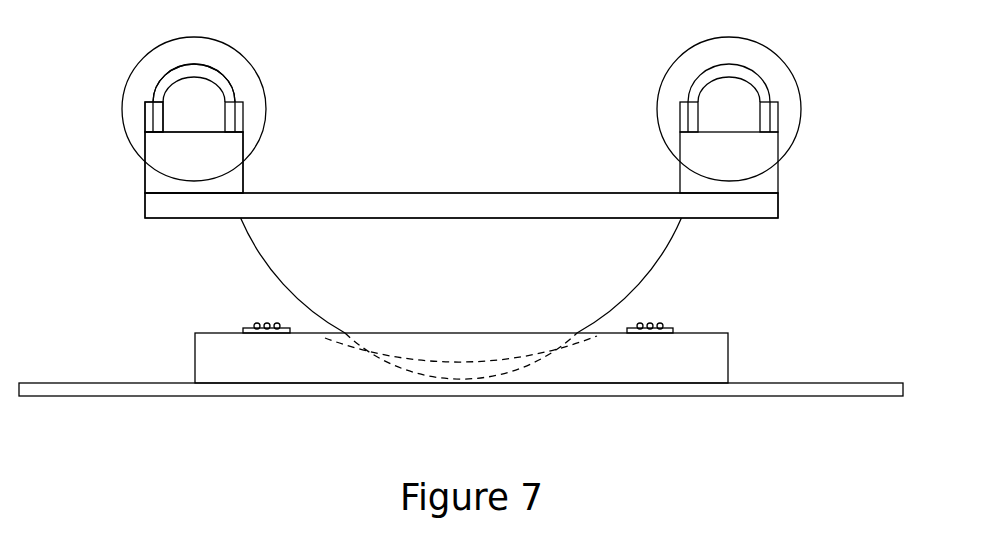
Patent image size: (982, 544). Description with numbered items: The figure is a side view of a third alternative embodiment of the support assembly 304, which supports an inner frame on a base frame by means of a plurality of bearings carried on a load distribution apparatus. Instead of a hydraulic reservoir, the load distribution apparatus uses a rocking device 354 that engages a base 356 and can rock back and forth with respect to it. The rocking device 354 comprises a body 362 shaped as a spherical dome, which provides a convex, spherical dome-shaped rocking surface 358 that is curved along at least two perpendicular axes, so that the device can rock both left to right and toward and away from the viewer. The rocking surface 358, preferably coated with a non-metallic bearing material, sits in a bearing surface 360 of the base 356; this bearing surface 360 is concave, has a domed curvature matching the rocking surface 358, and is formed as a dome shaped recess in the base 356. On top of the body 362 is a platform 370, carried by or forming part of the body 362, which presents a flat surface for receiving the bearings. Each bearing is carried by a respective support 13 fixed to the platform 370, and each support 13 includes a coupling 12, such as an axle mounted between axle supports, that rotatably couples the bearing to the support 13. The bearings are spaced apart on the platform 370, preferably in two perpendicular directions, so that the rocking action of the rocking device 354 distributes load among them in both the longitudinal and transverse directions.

The coupling 12 is at (150, 117).
The support 13 is at (228, 182).
The support assembly 304 is at (545, 108).
The rocking device 354 is at (590, 247).
The base 356 is at (710, 350).
The rocking surface 358 is at (368, 345).
The bearing surface 360 is at (540, 365).
The body 362 is at (487, 294).
The platform 370 is at (373, 202).